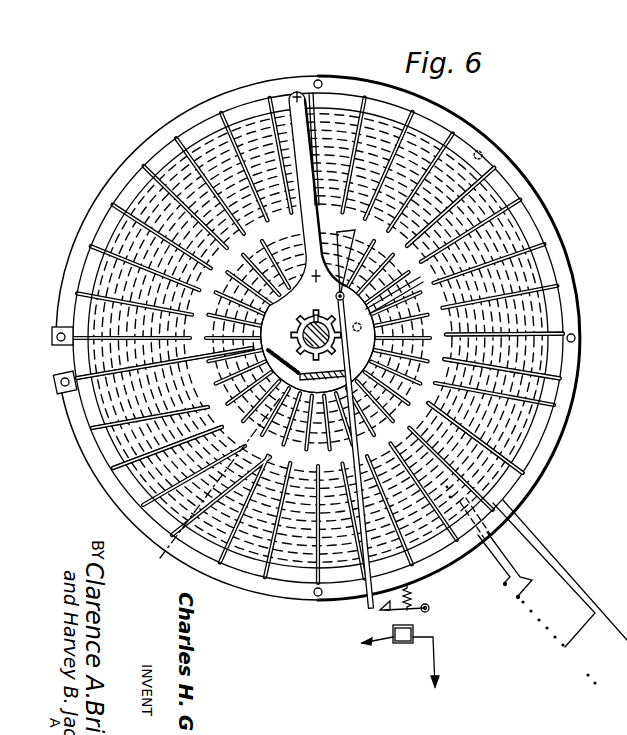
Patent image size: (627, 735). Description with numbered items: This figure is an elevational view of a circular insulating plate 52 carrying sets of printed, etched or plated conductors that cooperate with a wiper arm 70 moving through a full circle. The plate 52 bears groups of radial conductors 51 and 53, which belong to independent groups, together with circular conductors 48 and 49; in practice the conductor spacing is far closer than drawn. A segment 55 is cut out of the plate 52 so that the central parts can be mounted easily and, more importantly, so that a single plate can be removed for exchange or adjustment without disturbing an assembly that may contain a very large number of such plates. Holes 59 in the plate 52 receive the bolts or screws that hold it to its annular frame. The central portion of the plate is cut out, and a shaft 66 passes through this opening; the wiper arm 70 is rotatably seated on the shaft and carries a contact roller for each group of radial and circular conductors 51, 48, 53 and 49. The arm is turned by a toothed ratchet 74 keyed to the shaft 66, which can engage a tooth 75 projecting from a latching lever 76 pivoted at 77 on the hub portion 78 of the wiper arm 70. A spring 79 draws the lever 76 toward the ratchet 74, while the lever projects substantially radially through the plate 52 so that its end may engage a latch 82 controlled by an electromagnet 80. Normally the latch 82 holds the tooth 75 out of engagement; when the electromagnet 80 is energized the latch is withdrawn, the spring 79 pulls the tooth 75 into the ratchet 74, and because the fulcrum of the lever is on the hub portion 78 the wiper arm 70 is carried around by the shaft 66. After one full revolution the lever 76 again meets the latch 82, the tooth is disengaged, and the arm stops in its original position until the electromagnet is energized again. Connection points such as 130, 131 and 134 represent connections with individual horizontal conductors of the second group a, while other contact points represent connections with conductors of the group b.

The circular conductors 48 is at (112, 441).
The circular conductors 49 is at (416, 347).
The radial conductors 51 is at (496, 205).
The circular insulating plate 52 is at (538, 457).
The radial conductors 53 is at (246, 398).
The segment 55 is at (178, 453).
The holes 59 is at (576, 339).
The shaft 66 is at (489, 368).
The wiper arm 70 is at (300, 135).
The toothed ratchet 74 is at (293, 335).
The tooth 75 is at (394, 292).
The latching lever 76 is at (367, 578).
The pivot 77 is at (338, 256).
The hub portion 78 is at (318, 339).
The spring 79 is at (292, 430).
The electromagnet 80 is at (388, 648).
The latch 82 is at (400, 615).
The connection point 130 is at (577, 667).
The connection point 131 is at (582, 672).
The connection point 134 is at (626, 663).
The second group of conductors a is at (408, 323).
The group of conductors b is at (521, 274).